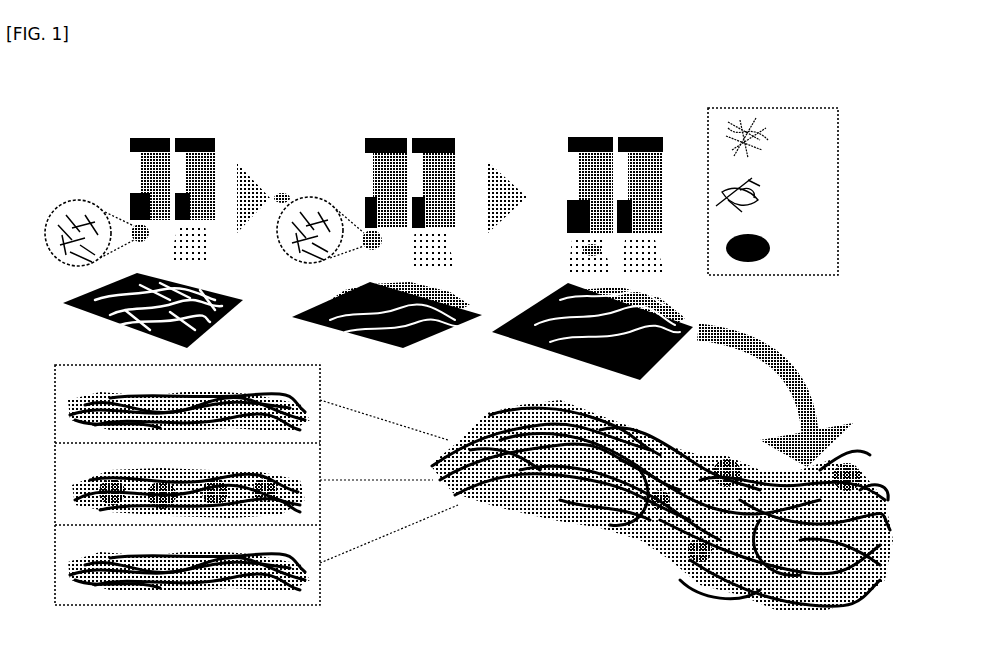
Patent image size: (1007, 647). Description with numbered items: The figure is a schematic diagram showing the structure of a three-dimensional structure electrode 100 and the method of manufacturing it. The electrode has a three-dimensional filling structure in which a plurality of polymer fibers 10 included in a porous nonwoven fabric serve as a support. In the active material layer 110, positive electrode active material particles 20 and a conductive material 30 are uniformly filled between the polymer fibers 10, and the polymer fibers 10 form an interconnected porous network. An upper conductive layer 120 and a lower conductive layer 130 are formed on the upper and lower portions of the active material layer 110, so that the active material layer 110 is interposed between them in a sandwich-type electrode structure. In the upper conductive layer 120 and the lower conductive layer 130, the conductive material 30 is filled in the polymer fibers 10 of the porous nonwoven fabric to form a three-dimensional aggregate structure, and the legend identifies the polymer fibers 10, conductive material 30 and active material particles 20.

The polymer fibers 10 is at (207, 238).
The positive electrode active material particles 20 is at (688, 254).
The conductive material 30 is at (428, 222).
The three-dimensional structure electrode 100 is at (661, 506).
The active material layer 110 is at (188, 485).
The upper conductive layer 120 is at (189, 402).
The lower conductive layer 130 is at (189, 563).